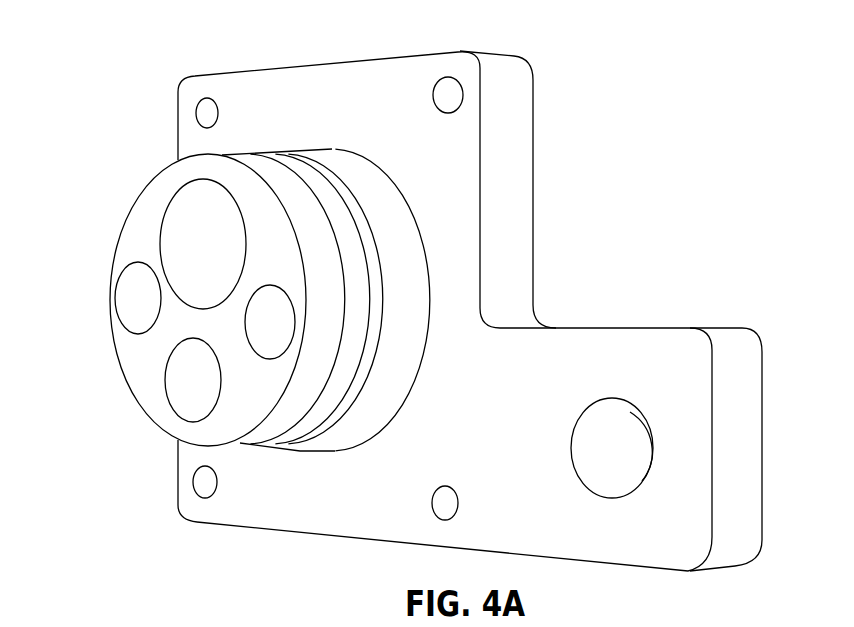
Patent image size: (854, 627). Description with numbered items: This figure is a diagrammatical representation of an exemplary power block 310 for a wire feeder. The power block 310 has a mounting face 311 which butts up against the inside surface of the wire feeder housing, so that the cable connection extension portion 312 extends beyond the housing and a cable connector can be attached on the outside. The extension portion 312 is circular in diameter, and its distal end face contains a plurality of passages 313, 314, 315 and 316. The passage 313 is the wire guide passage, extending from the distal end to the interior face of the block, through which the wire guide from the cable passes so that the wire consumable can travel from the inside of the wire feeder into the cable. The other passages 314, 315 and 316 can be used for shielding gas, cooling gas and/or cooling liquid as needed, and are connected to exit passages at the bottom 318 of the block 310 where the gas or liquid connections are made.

The power block 310 is at (653, 108).
The mounting face 311 is at (285, 88).
The cable connection extension portion 312 is at (153, 182).
The wire guide passage 313 is at (187, 240).
The passage 314 is at (137, 303).
The passage 315 is at (180, 375).
The passage 316 is at (268, 343).
The bottom of the block 318 is at (300, 533).